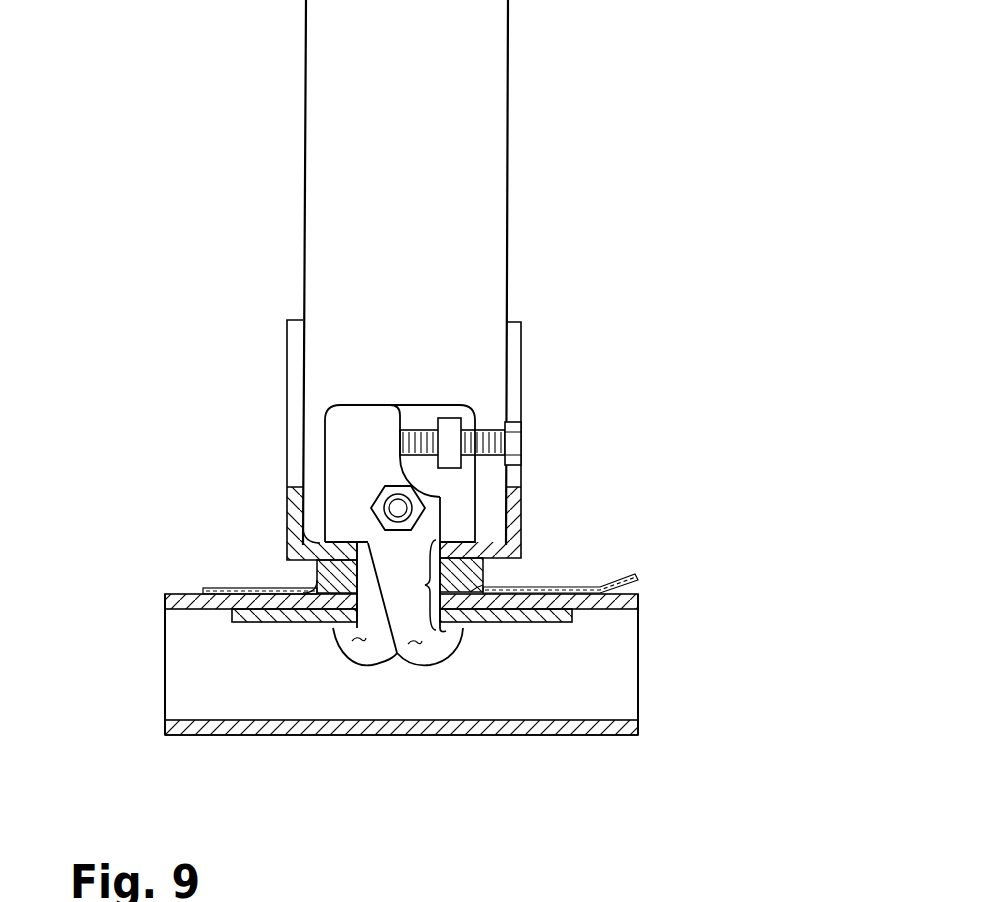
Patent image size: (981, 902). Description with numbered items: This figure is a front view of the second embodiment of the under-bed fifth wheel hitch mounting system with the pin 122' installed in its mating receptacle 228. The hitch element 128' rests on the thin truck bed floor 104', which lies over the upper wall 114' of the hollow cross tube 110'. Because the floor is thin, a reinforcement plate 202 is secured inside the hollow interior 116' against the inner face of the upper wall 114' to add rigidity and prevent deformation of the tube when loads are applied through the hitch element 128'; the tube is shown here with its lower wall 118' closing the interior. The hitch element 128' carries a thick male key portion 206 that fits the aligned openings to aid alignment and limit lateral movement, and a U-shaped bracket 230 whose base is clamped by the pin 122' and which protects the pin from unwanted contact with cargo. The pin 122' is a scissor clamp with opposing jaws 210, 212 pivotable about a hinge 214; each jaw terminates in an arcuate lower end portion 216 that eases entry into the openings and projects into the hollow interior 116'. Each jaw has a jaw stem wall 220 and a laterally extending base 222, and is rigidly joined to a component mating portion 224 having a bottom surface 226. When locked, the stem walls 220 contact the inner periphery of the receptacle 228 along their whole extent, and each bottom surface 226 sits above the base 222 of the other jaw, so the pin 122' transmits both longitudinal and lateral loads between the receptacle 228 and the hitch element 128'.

The hitch element 128' is at (359, 272).
The pin 122' is at (400, 457).
The hinge 214 is at (400, 500).
The component mating portion 224 is at (340, 467).
The U-shaped bracket 230 is at (282, 508).
The bottom surface 226 is at (303, 548).
The jaw stem wall 220 is at (317, 570).
The male key portion 206 is at (483, 570).
The receptacle 228 is at (414, 564).
The first jaw 210 is at (362, 643).
The second jaw 212 is at (415, 643).
The lower end portion 216 is at (368, 667).
The base 222 is at (462, 628).
The upper wall 114' is at (370, 580).
The reinforcement plate 202 is at (538, 623).
The hollow interior 116' is at (450, 664).
The bottom plate 118' is at (401, 757).
The cross tube 110' is at (401, 770).
The truck bed floor 104' is at (456, 550).